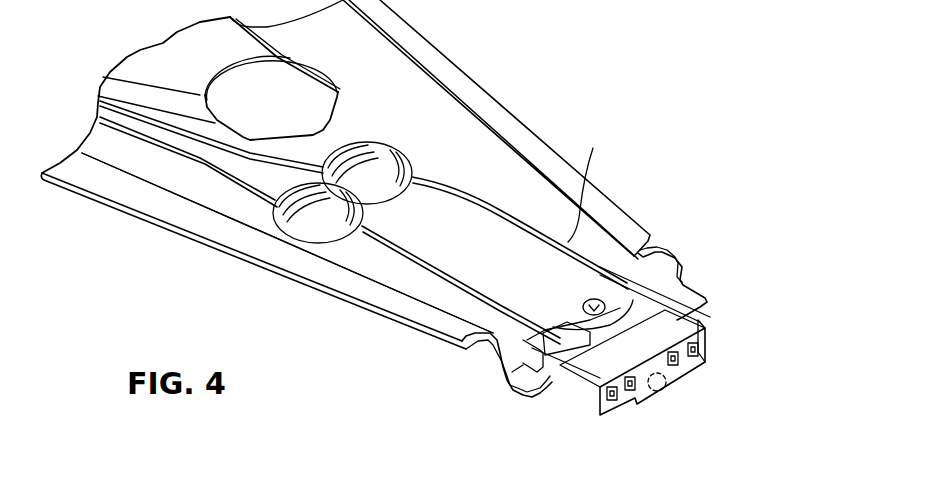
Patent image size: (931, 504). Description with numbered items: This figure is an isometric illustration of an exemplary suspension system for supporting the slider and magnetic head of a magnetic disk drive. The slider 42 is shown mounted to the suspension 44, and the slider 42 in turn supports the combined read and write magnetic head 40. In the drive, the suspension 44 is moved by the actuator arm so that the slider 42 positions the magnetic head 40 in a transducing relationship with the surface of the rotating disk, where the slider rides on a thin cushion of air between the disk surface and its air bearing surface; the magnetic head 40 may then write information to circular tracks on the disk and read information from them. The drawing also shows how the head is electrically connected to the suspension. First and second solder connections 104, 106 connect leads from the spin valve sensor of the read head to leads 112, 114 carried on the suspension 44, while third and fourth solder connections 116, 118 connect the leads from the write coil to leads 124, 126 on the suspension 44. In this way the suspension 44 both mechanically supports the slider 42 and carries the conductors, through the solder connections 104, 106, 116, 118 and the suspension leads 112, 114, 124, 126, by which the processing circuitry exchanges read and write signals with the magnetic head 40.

The magnetic head 40 is at (667, 393).
The slider 42 is at (619, 395).
The suspension 44 is at (513, 112).
The first solder connection 104 is at (605, 400).
The second solder connection 106 is at (703, 347).
The lead 112 is at (384, 254).
The lead 114 is at (596, 183).
The third solder connection 116 is at (629, 391).
The fourth solder connection 118 is at (677, 366).
The lead 124 is at (432, 272).
The lead 126 is at (487, 208).